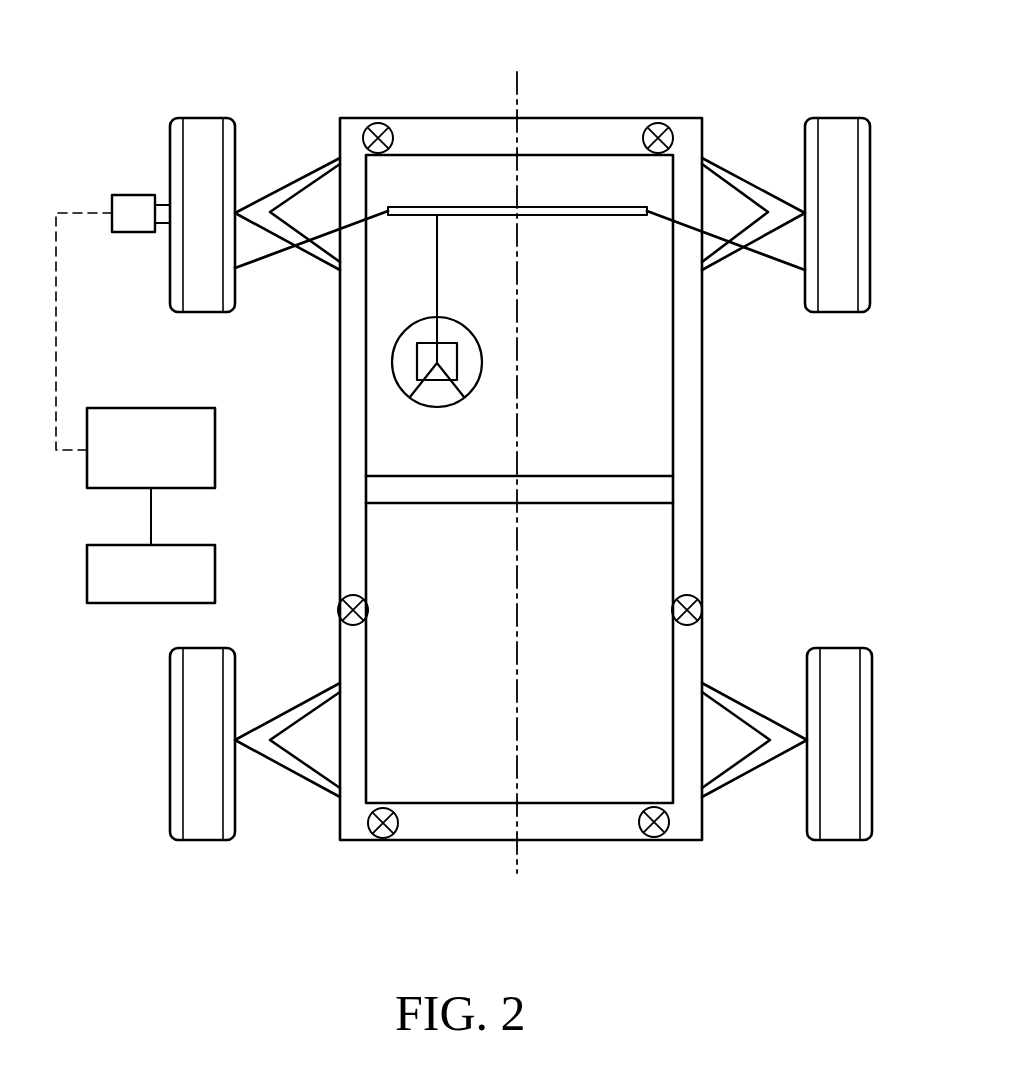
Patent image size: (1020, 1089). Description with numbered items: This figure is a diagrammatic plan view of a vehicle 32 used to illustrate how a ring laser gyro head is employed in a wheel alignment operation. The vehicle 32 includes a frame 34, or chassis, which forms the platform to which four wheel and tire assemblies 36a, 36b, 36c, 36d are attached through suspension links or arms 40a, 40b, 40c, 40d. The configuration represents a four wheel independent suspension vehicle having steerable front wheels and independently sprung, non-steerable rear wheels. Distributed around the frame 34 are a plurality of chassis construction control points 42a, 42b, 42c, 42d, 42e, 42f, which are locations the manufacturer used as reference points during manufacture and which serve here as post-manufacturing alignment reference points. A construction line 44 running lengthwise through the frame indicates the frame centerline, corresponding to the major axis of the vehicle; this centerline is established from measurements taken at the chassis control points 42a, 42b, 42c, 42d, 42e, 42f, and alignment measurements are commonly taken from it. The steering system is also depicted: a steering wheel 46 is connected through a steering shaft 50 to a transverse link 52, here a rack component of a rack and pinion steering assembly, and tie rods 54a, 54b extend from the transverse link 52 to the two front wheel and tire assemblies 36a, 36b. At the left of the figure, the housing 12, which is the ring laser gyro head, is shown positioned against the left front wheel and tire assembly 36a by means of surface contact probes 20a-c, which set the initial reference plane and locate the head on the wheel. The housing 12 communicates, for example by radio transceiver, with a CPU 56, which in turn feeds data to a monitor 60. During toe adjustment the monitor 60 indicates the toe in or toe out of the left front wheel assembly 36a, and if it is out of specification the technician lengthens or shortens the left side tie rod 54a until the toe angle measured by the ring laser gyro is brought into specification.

The housing 12 is at (457, 375).
The surface contact probes 20a-c is at (162, 195).
The vehicle 32 is at (762, 446).
The frame 34 is at (702, 526).
The wheel and tire assembly 36a is at (205, 118).
The wheel and tire assembly 36b is at (830, 118).
The wheel and tire assembly 36c is at (200, 842).
The wheel and tire assembly 36d is at (836, 840).
The suspension arm 40a is at (312, 262).
The suspension arm 40b is at (722, 258).
The suspension arm 40c is at (282, 768).
The suspension arm 40d is at (757, 768).
The chassis construction control point 42a is at (378, 123).
The chassis construction control point 42b is at (659, 123).
The chassis construction control point 42c is at (348, 598).
The chassis construction control point 42d is at (697, 598).
The chassis construction control point 42e is at (383, 838).
The chassis construction control point 42f is at (655, 838).
The construction line 44 is at (520, 668).
The steering wheel 46 is at (453, 318).
The steering shaft 50 is at (437, 262).
The transverse link 52 is at (545, 215).
The tie rod 54a is at (258, 268).
The tie rod 54b is at (780, 270).
The CPU 56 is at (182, 408).
The monitor 60 is at (182, 545).